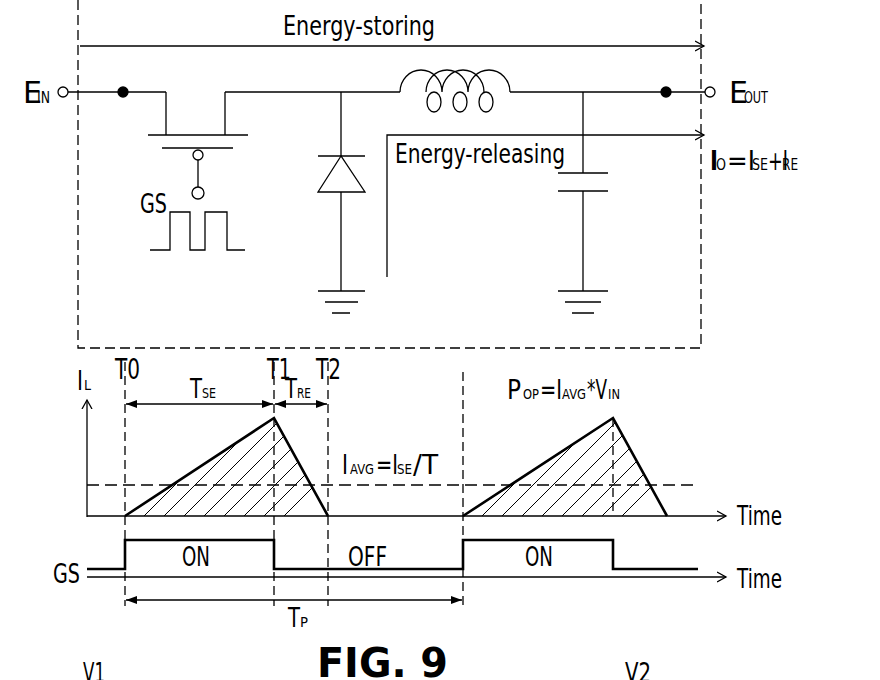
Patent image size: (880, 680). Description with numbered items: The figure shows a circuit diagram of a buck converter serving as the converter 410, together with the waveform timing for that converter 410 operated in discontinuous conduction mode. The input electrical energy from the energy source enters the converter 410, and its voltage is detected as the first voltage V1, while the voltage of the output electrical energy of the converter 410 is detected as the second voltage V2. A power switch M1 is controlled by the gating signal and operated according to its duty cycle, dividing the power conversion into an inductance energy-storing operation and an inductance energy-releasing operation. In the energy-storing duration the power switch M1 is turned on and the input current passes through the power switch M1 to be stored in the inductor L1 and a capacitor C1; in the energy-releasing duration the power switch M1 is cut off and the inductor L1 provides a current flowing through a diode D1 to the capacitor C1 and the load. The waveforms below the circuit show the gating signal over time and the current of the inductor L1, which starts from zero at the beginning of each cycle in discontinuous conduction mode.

The converter 410 is at (702, 268).
The power switch M1 is at (198, 131).
The inductor L1 is at (468, 68).
The diode D1 is at (328, 202).
The capacitor C1 is at (602, 202).
The first voltage V1 is at (123, 89).
The second voltage V2 is at (666, 89).